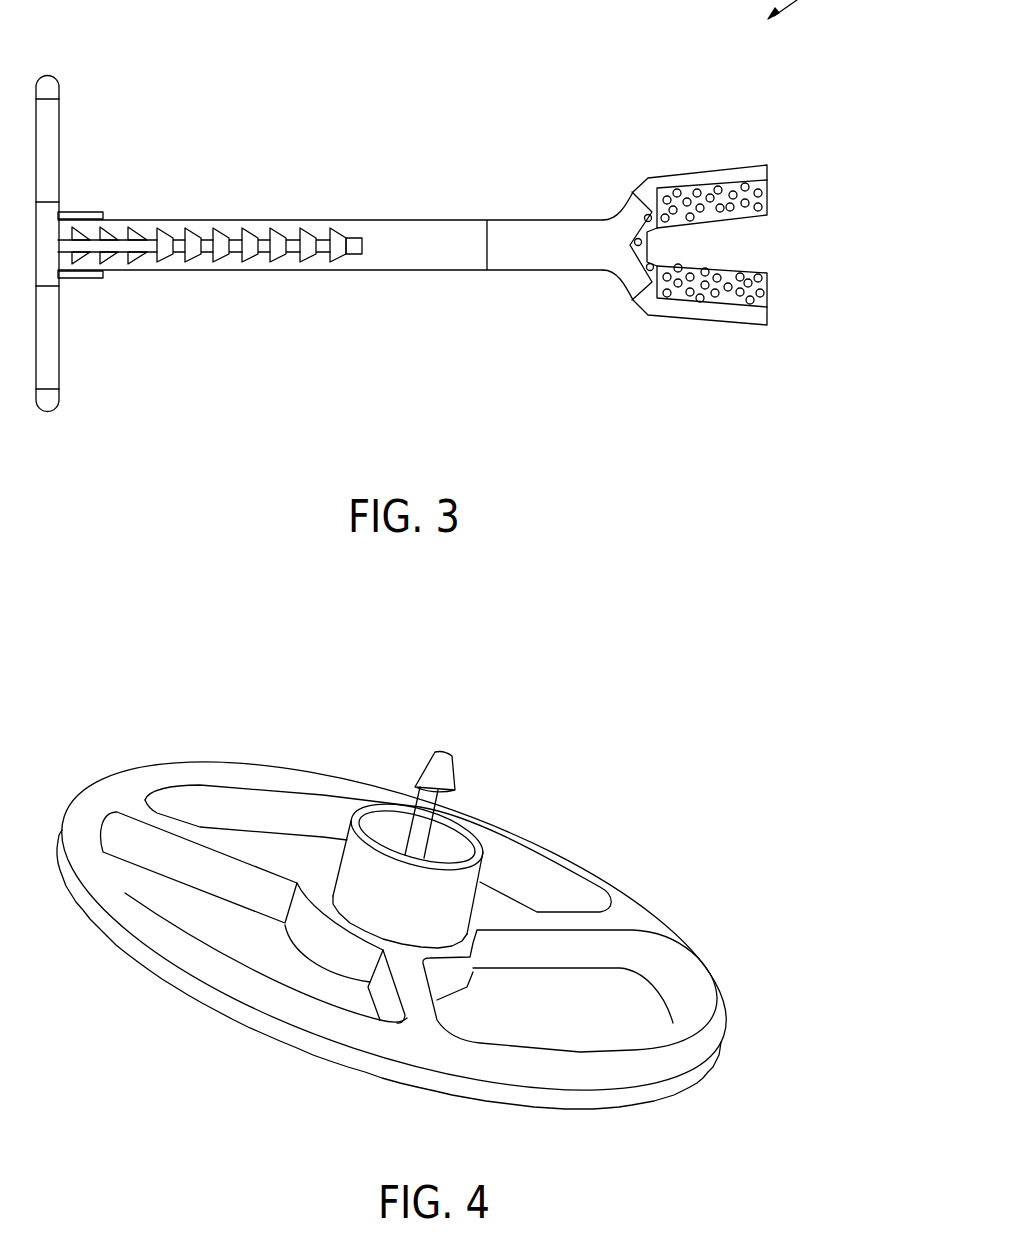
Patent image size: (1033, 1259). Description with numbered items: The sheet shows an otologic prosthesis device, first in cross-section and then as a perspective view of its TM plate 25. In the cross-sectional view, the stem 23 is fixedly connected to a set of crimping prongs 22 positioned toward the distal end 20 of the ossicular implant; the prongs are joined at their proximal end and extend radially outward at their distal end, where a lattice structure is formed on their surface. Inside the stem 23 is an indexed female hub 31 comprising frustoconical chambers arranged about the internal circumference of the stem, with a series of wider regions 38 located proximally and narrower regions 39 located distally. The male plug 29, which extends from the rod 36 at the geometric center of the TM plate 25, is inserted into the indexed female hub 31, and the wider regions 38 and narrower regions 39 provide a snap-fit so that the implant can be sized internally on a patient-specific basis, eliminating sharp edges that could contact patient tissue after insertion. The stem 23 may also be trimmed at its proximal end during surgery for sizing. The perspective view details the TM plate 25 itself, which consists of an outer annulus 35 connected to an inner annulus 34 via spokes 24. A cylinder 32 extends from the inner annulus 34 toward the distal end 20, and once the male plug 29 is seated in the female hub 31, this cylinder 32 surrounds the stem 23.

In FIG. 3, the distal end 20 is at (768, 287).
In FIG. 3, the set of crimping prongs 22 is at (693, 310).
In FIG. 3, the stem 23 is at (415, 240).
In FIG. 4, the spokes 24 is at (573, 953).
In FIG. 3, the TM plate 25 is at (51, 89).
In FIG. 4, the TM plate 25 is at (768, 909).
In FIG. 3, the male plug 29 is at (135, 253).
In FIG. 4, the male plug 29 is at (442, 768).
In FIG. 3, the indexed female hub 31 is at (167, 248).
In FIG. 4, the cylinder 32 is at (450, 903).
In FIG. 4, the inner annulus 34 is at (457, 982).
In FIG. 4, the outer annulus 35 is at (440, 1040).
In FIG. 3, the rod 36 is at (112, 244).
In FIG. 4, the rod 36 is at (430, 812).
In FIG. 3, the wider regions 38 is at (193, 232).
In FIG. 3, the narrower regions 39 is at (288, 238).